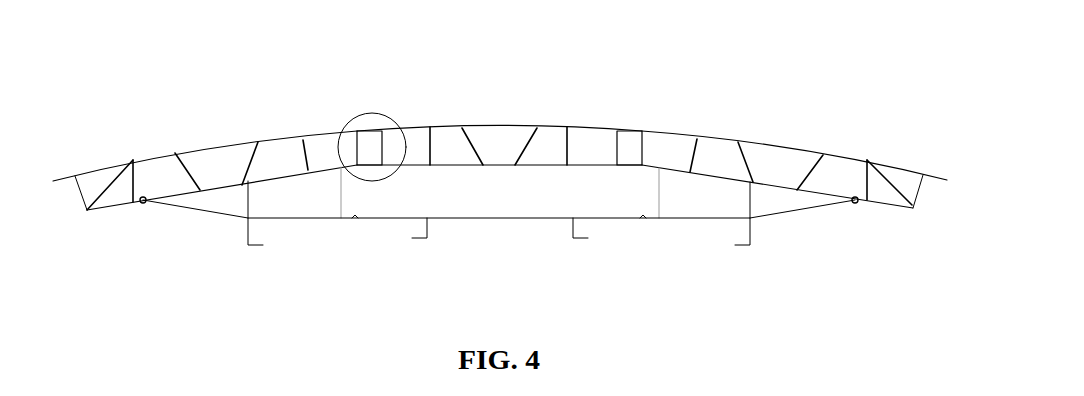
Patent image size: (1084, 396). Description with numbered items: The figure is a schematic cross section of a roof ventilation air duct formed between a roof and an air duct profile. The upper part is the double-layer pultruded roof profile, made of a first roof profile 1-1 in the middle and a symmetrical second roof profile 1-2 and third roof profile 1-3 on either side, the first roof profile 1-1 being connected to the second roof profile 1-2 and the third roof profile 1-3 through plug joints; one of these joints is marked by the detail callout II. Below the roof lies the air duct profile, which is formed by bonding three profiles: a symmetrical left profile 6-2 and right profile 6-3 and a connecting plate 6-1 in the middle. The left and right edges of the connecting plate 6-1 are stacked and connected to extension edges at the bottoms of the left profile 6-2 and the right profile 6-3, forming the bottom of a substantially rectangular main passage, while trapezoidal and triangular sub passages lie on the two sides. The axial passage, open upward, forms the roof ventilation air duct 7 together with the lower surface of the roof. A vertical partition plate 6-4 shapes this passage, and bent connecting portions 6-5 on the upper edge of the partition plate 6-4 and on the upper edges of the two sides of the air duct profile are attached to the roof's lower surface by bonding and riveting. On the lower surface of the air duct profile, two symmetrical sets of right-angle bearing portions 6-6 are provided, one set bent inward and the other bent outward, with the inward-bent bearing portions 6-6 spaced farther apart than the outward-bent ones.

The first roof profile 1-1 is at (503, 126).
The second roof profile 1-2 is at (218, 146).
The third roof profile 1-3 is at (770, 146).
The roof ventilation air duct 7 is at (573, 195).
The connecting plate 6-1 is at (492, 218).
The left profile 6-2 is at (298, 218).
The right profile 6-3 is at (690, 218).
The partition plate 6-4 is at (341, 219).
The connecting portion 6-5 is at (642, 165).
The bearing portion 6-6 is at (252, 243).
The detail callout II is at (372, 113).